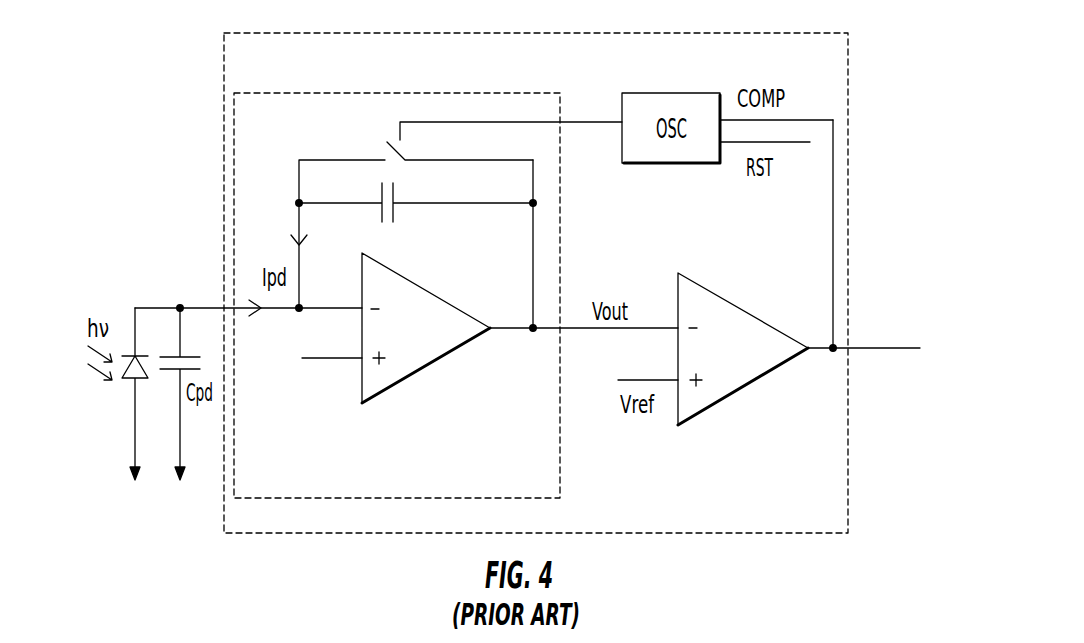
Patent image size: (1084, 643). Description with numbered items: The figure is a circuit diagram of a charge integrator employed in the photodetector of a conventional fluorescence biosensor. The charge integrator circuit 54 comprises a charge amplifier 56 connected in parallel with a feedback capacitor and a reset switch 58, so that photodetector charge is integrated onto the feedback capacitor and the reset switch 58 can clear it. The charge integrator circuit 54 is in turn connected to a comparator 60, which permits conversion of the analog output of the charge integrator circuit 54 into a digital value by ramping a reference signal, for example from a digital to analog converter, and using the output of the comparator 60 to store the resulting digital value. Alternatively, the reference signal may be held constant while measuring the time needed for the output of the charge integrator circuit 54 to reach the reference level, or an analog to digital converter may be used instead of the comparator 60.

The charge integrator circuit 54 is at (381, 93).
The charge amplifier 56 is at (441, 297).
The reset switch 58 is at (357, 160).
The comparator 60 is at (772, 327).